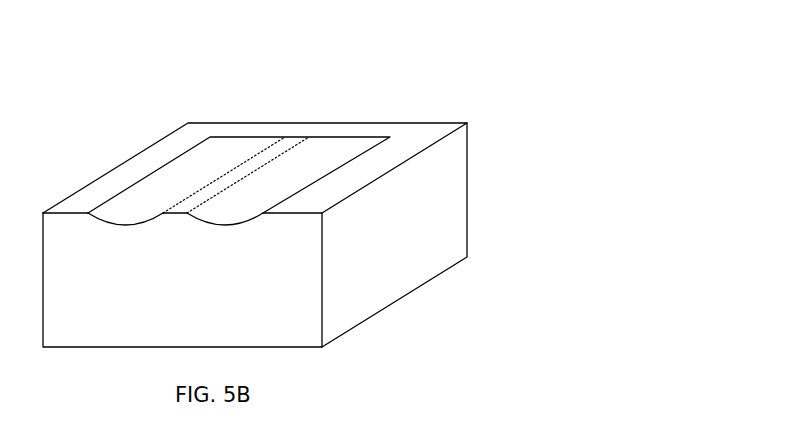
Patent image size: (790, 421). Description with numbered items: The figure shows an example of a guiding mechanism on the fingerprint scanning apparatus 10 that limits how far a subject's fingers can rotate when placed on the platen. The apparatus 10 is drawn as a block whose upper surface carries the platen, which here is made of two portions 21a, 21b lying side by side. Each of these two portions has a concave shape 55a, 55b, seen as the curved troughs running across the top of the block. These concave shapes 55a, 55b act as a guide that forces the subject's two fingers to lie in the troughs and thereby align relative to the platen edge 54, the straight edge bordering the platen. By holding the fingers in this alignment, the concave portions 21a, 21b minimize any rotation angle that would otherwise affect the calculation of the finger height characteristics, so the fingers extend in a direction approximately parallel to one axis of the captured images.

The apparatus 10 is at (467, 137).
The platen edge 54 is at (155, 172).
The first platen portion 21a is at (228, 147).
The second platen portion 21b is at (338, 142).
The concave shape of first platen portion 55a is at (138, 227).
The concave shape of second platen portion 55b is at (232, 227).